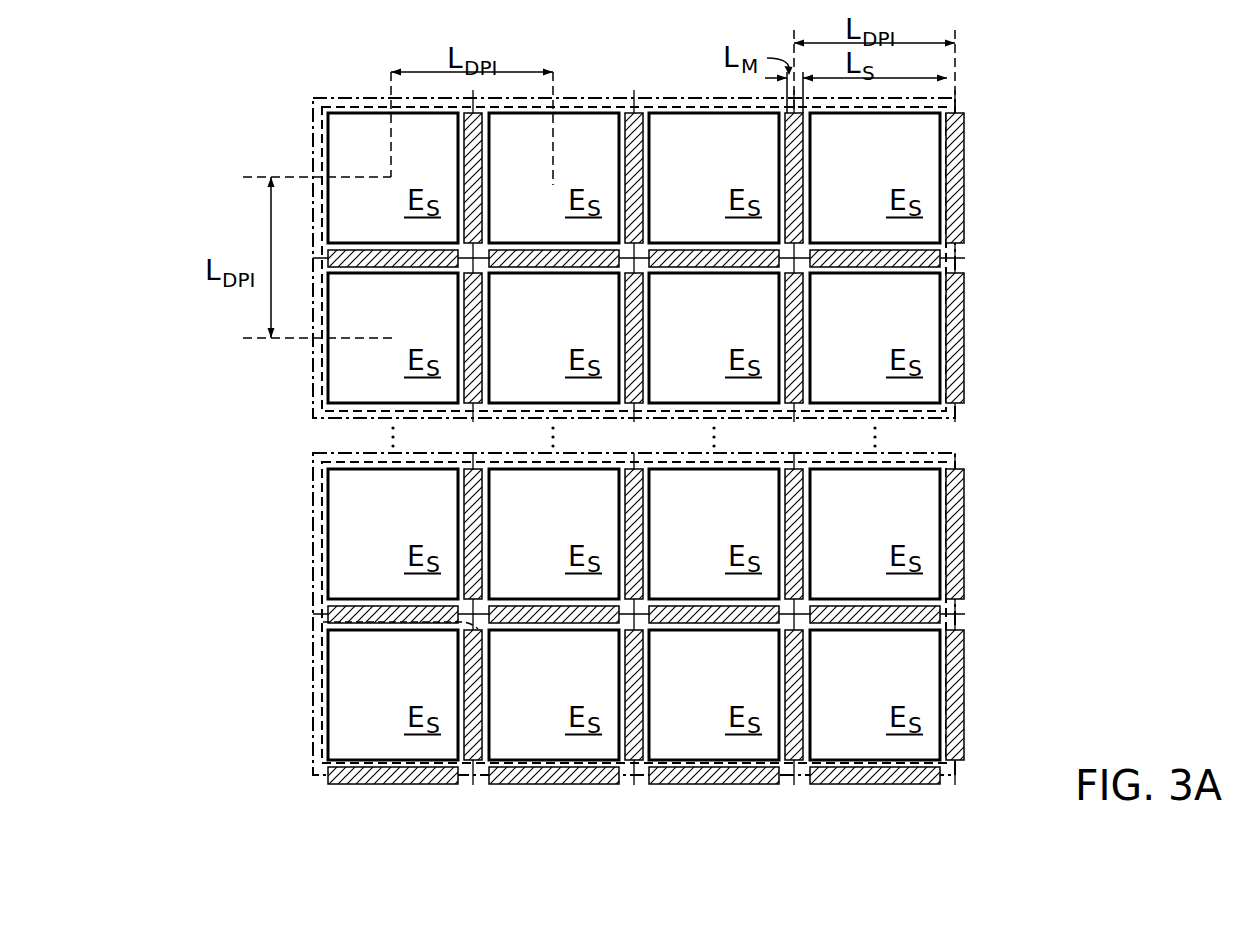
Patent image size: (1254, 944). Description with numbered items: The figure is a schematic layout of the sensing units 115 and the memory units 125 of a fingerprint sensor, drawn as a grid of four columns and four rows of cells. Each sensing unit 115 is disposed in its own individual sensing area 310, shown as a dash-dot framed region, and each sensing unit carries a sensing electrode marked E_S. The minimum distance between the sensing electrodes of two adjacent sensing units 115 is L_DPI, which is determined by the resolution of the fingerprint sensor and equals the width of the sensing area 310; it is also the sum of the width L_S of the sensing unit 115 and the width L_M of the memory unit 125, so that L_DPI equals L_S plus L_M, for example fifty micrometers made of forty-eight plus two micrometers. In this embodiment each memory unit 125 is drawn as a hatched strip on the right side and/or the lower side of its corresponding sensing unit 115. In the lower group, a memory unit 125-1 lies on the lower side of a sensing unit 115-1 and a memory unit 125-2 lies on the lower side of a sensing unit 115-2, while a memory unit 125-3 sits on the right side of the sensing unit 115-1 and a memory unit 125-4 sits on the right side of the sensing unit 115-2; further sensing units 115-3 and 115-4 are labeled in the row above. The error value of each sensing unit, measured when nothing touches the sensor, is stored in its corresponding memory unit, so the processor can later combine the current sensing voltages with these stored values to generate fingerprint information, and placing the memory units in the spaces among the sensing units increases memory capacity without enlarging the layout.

The sensing unit 115 is at (340, 105).
The sensing unit 115-1 is at (309, 762).
The sensing unit 115-2 is at (323, 623).
The third pixel 115-3 is at (418, 462).
The fourth pixel 115-4 is at (583, 462).
The memory unit 125 is at (966, 178).
The memory unit 125-1 is at (390, 785).
The memory unit 125-2 is at (548, 785).
The memory unit 125-3 is at (473, 785).
The memory unit 125-4 is at (634, 785).
The sensing area 310 is at (753, 453).